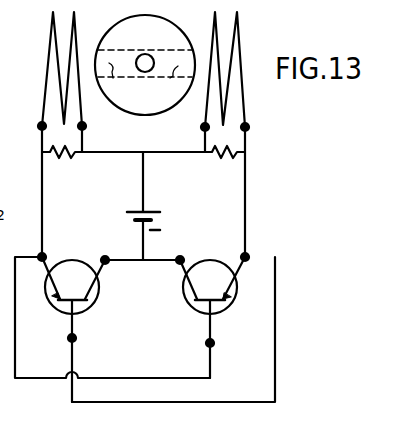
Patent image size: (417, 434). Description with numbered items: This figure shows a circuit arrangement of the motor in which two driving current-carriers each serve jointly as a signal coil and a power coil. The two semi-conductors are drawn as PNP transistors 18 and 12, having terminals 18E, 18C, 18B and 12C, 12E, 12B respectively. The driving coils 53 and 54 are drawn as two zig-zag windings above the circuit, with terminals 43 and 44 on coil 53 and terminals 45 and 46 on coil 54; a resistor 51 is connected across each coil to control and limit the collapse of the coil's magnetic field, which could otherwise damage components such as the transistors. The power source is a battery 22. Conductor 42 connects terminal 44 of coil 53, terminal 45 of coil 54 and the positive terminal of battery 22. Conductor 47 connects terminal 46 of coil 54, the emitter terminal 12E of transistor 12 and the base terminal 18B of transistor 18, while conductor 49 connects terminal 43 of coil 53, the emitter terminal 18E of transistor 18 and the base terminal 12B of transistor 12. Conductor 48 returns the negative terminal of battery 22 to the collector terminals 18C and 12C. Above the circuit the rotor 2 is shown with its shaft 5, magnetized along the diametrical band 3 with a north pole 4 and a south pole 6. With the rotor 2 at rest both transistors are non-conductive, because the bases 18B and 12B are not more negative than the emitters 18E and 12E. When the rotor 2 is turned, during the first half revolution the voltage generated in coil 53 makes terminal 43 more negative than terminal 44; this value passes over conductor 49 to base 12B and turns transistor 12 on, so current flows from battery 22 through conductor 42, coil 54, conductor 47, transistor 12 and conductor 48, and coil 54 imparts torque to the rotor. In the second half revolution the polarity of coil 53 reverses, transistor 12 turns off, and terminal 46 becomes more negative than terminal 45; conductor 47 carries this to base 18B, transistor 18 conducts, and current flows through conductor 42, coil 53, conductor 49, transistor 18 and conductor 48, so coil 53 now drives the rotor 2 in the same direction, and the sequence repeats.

The rotor 2 is at (143, 105).
The diametrical band 3 is at (118, 60).
The north pole 4 is at (116, 87).
The shaft 5 is at (152, 56).
The south pole 6 is at (176, 86).
The PNP transistor 12 is at (195, 300).
The base terminal of transistor 12 12B is at (212, 343).
The collector terminal of transistor 12 12C is at (182, 256).
The emitter terminal of transistor 12 12E is at (250, 257).
The PNP transistor 18 is at (88, 302).
The base terminal of transistor 18 18B is at (74, 339).
The collector terminal of transistor 18 18C is at (106, 256).
The emitter terminal of transistor 18 18E is at (57, 271).
The battery 22 is at (162, 218).
The conductor 42 is at (143, 189).
The terminal of coil 53 43 is at (40, 127).
The terminal of coil 53 44 is at (128, 130).
The terminal of coil 54 45 is at (203, 127).
The terminal of coil 54 46 is at (247, 128).
The conductor 47 is at (245, 222).
The conductor 48 is at (147, 258).
The conductor 49 is at (42, 223).
The resistor 51 is at (60, 157).
The driving coil 53 is at (75, 13).
The driving coil 54 is at (238, 13).